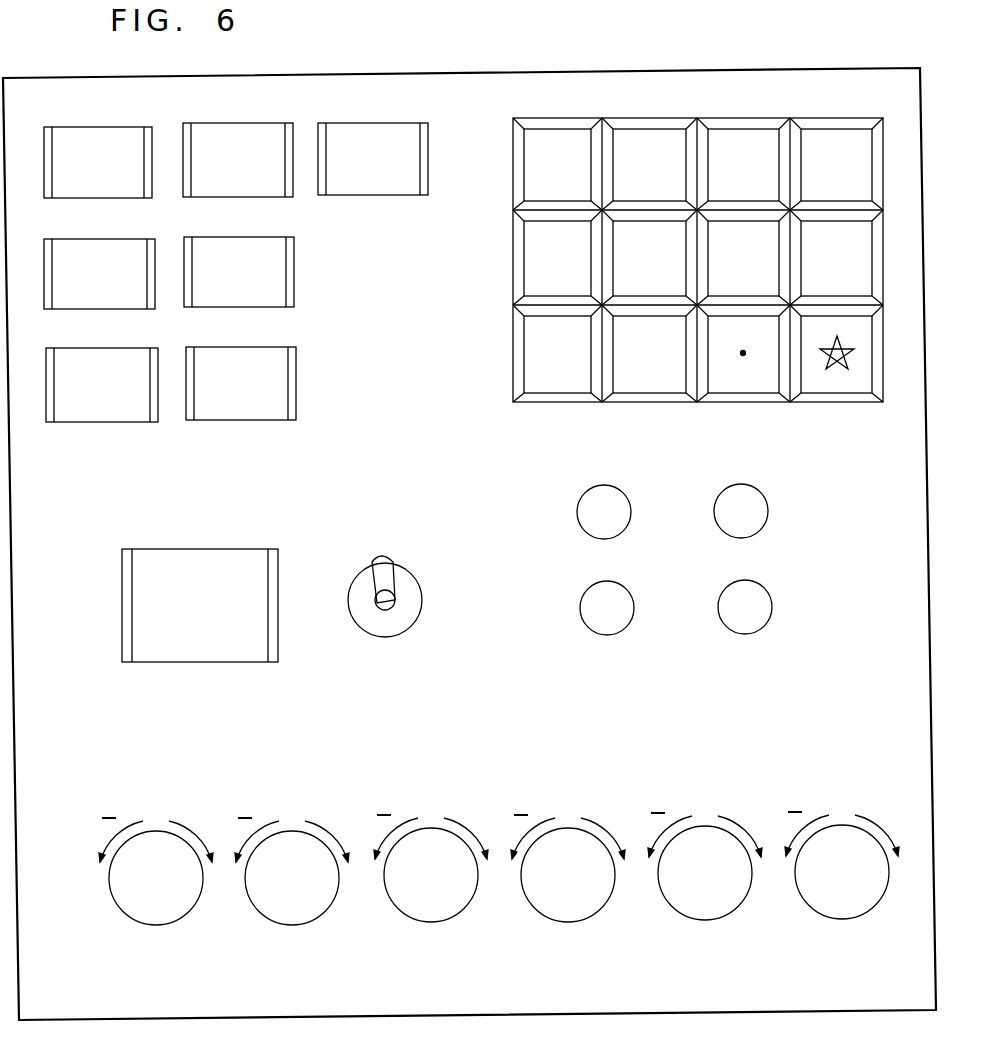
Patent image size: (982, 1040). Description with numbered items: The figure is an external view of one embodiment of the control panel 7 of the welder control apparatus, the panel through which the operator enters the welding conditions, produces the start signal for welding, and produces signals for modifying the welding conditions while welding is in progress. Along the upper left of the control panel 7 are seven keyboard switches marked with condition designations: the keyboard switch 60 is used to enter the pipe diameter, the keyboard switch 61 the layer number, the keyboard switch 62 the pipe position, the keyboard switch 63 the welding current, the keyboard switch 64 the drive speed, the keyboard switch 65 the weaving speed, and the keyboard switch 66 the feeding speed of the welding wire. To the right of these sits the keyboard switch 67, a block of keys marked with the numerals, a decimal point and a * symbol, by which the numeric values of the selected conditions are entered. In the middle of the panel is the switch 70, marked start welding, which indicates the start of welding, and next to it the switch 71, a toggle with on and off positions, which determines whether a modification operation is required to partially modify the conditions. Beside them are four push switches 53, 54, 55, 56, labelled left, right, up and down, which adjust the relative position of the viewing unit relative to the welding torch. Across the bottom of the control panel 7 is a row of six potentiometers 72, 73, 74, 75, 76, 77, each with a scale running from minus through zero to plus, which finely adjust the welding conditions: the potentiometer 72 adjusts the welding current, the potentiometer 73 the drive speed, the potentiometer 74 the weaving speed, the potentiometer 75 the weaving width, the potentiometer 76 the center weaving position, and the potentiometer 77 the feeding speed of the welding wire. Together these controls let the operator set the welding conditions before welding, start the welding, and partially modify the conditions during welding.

The control panel 7 is at (538, 87).
The switch 53 is at (596, 486).
The switch 54 is at (607, 635).
The switch 55 is at (741, 484).
The switch 56 is at (750, 634).
The keyboard switch 60 is at (78, 127).
The keyboard switch 61 is at (82, 239).
The keyboard switch 62 is at (93, 348).
The keyboard switch 63 is at (233, 123).
The keyboard switch 64 is at (236, 237).
The keyboard switch 65 is at (230, 347).
The keyboard switch 66 is at (347, 123).
The keyboard switch 67 is at (513, 212).
The switch 70 is at (189, 550).
The switch 71 is at (391, 556).
The potentiometer 72 is at (161, 925).
The potentiometer 73 is at (299, 925).
The potentiometer 74 is at (447, 922).
The potentiometer 75 is at (587, 922).
The potentiometer 76 is at (726, 920).
The potentiometer 77 is at (851, 919).